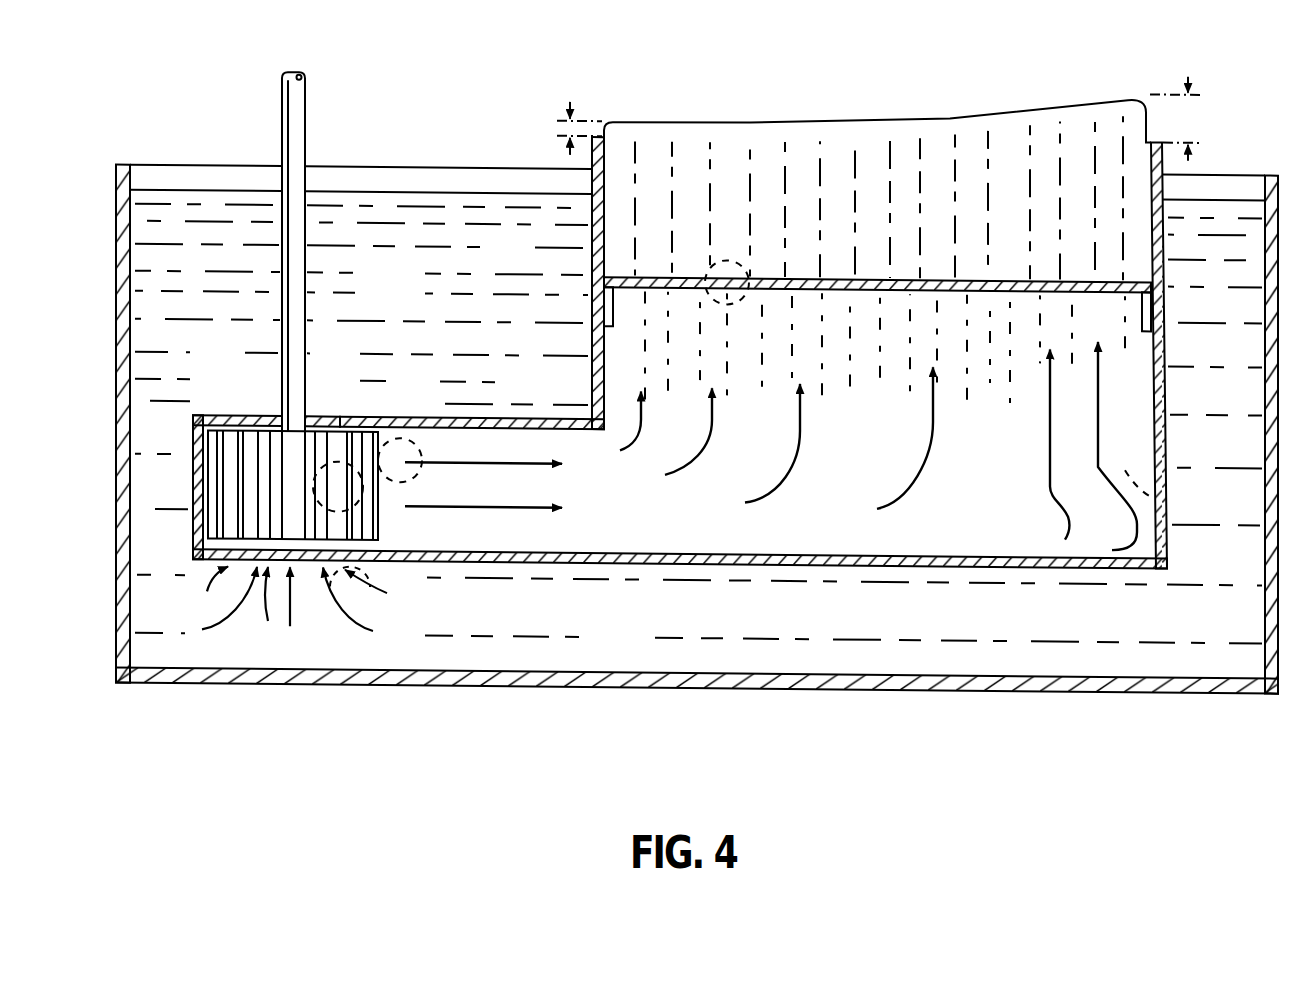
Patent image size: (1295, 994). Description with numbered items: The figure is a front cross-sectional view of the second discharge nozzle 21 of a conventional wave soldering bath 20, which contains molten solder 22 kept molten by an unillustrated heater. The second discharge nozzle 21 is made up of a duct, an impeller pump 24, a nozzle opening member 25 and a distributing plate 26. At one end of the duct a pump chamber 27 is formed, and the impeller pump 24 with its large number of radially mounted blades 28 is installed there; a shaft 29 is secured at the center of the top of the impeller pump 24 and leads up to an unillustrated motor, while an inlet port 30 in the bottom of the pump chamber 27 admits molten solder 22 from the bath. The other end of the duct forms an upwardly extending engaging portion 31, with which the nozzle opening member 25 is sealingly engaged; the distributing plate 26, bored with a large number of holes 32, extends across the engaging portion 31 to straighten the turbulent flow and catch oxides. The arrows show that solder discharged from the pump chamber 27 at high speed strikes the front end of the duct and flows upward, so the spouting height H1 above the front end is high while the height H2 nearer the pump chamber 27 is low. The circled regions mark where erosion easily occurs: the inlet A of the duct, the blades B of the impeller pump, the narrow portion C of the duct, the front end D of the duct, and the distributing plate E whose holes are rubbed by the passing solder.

The wave soldering bath 20 is at (699, 733).
The second discharge nozzle 21 is at (628, 567).
The molten solder 22 is at (412, 306).
The impeller pump 24 is at (208, 474).
The nozzle opening member 25 is at (591, 233).
The distributing plate 26 is at (1027, 270).
The pump chamber 27 is at (323, 434).
The blades 28 is at (257, 434).
The shaft 29 is at (280, 105).
The inlet port 30 is at (287, 615).
The engaging portion 31 is at (591, 373).
The holes 32 is at (850, 272).
The inlet of the duct A is at (362, 592).
The blades of the impeller pump B is at (342, 492).
The narrow portion of the duct C is at (424, 432).
The front end of the duct D is at (1144, 446).
The distributing plate (erosion location) E is at (728, 259).
The height of spouting above the front end of the duct H1 is at (1183, 98).
The height of spouting closer to the pump chamber H2 is at (577, 109).